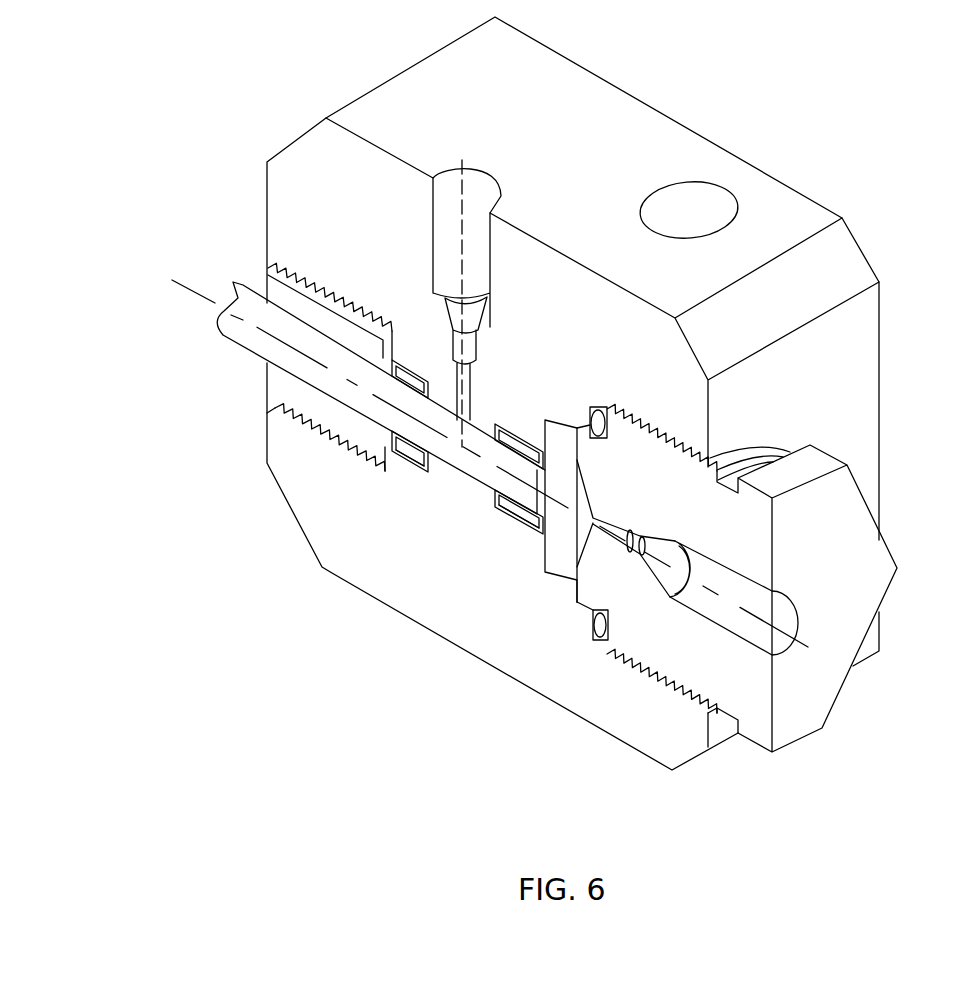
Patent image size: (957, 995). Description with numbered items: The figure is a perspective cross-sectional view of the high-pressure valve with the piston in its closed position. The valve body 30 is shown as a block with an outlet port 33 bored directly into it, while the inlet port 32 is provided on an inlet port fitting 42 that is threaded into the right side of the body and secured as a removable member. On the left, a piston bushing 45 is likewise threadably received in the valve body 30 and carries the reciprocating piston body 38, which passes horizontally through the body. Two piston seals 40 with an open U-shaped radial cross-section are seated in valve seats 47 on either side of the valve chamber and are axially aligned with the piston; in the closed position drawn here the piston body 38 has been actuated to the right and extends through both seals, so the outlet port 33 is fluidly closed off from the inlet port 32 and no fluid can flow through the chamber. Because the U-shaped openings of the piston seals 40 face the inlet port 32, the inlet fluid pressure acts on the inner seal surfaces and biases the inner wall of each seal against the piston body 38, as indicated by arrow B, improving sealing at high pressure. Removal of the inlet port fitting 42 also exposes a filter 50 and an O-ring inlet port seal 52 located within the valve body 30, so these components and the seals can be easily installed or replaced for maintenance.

The valve body 30 is at (665, 142).
The inlet port 32 is at (785, 594).
The outlet port 33 is at (442, 197).
The piston body 38 is at (342, 394).
The piston seal 40 is at (404, 376).
The inlet port fitting 42 is at (807, 710).
The piston bushing 45 is at (268, 384).
The valve seat 47 is at (427, 474).
The filter 50 is at (563, 576).
The O-ring inlet port seal 52 is at (600, 642).
The arrow B is at (512, 514).